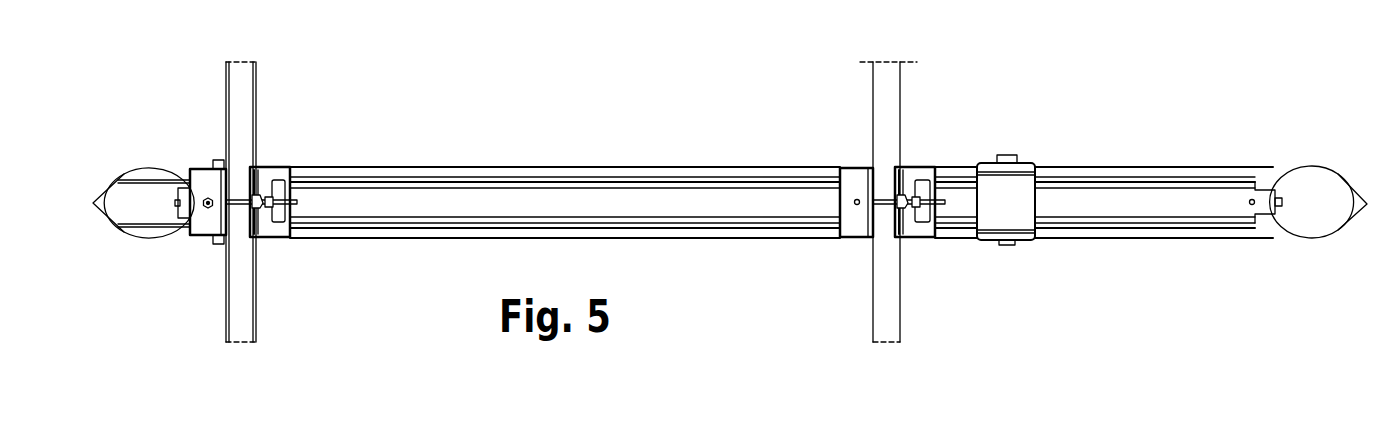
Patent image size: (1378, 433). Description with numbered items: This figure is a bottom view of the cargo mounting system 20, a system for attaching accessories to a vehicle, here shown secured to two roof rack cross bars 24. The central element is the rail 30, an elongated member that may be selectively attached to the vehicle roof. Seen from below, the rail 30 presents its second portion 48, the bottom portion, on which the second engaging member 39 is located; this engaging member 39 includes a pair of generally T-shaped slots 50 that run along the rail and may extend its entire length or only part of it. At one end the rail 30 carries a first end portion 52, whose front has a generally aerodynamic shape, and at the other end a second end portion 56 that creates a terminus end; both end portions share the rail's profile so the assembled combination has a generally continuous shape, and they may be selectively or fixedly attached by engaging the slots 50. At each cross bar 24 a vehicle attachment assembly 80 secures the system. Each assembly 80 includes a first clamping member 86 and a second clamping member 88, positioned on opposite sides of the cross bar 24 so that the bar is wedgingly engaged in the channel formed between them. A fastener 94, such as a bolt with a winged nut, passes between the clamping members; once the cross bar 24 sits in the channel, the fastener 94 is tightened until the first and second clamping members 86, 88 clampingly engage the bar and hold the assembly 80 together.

The cargo mounting system 20 is at (1093, 143).
The roof rack cross bar 24 is at (257, 84).
The rail 30 is at (450, 167).
The second engaging member 39 is at (636, 251).
The second portion of the rail 48 is at (617, 202).
The generally T-shaped slots 50 is at (692, 182).
The first end portion 52 is at (137, 220).
The second end portion 56 is at (1337, 200).
The vehicle attachment assembly 80 is at (293, 250).
The first clamping member 86 is at (283, 173).
The second clamping member 88 is at (208, 183).
The fastener 94 is at (265, 207).